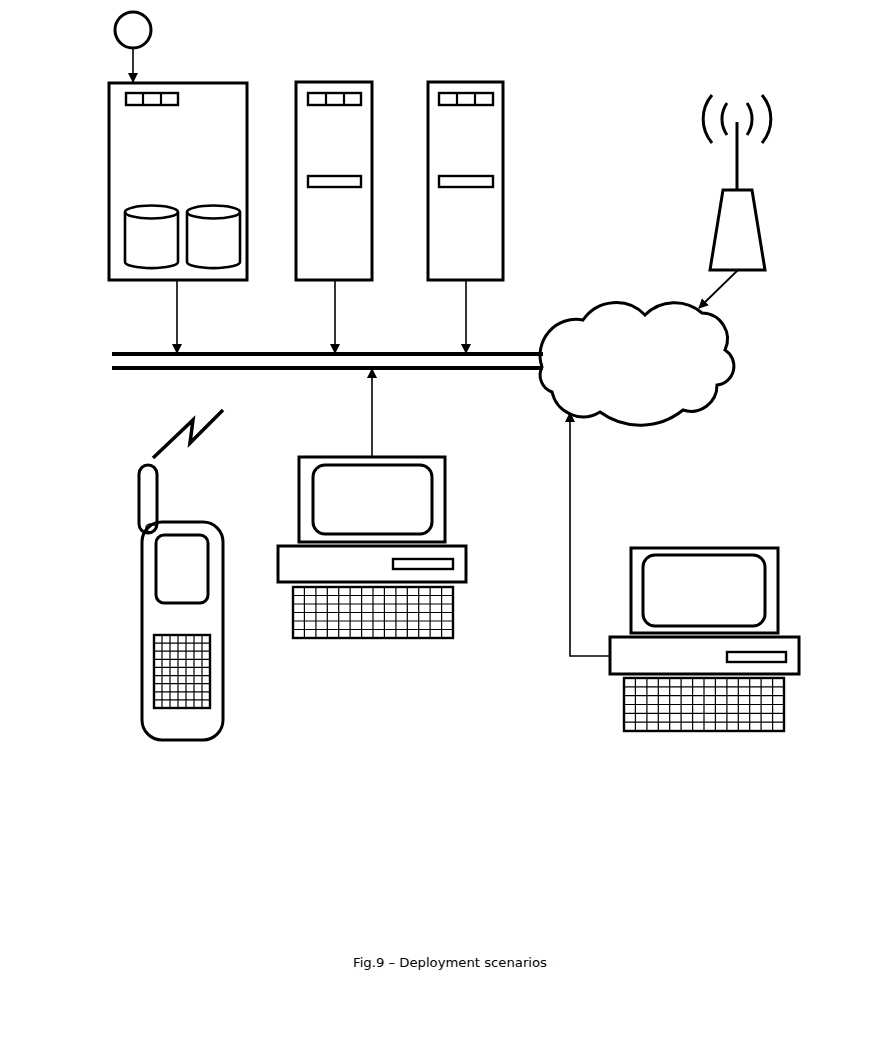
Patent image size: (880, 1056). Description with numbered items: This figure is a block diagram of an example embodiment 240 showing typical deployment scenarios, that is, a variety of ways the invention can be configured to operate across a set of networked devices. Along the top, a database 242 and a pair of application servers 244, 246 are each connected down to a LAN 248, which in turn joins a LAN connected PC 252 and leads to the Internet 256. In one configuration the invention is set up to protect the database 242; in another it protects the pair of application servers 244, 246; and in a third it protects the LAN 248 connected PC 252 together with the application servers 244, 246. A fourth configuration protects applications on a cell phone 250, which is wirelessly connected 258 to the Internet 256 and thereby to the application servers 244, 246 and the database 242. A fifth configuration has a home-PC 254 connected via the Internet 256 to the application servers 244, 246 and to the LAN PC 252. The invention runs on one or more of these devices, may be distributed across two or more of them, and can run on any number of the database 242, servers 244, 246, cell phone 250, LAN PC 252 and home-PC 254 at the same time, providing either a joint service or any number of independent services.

The example embodiment 240 is at (153, 25).
The database 242 is at (108, 93).
The application server 244 is at (330, 81).
The application server 246 is at (462, 81).
The LAN 248 is at (112, 354).
The cell phone 250 is at (132, 545).
The LAN connected PC 252 is at (335, 455).
The home-PC 254 is at (702, 548).
The Internet 256 is at (612, 301).
The wireless connection 258 is at (715, 227).